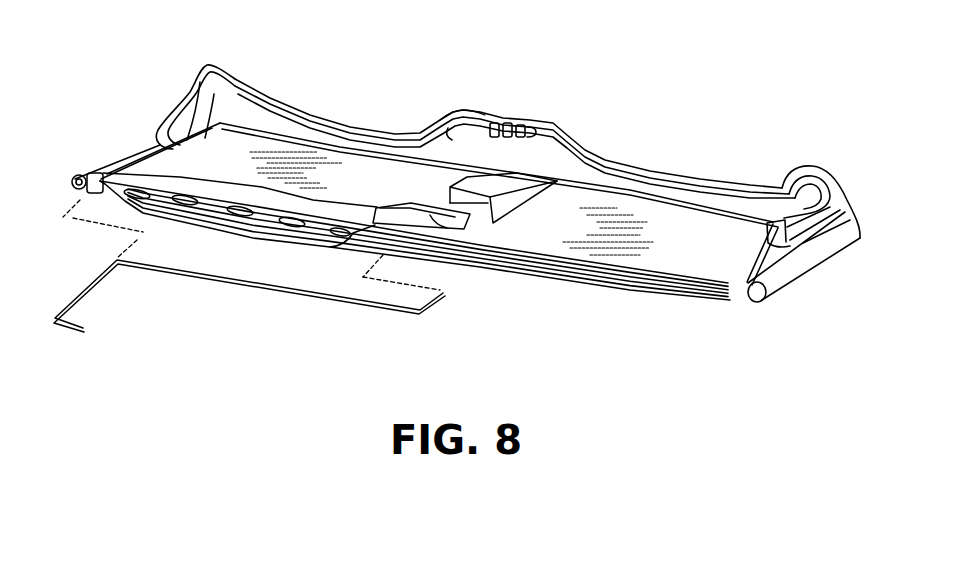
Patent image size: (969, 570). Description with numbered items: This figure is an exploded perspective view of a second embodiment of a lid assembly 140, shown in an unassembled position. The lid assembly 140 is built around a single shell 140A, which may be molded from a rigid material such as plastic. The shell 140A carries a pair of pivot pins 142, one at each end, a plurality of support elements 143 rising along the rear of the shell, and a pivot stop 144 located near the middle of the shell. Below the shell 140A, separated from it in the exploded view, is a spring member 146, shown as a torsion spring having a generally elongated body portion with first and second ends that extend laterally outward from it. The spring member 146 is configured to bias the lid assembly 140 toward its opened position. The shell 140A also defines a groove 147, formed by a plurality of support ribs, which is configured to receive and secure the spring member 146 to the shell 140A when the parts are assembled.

The lid assembly 140 is at (560, 124).
The shell 140A is at (677, 264).
The pivot pins 142 is at (90, 173).
The support elements 143 is at (209, 64).
The pivot stop 144 is at (463, 228).
The spring member 146 is at (253, 284).
The groove 147 is at (280, 235).